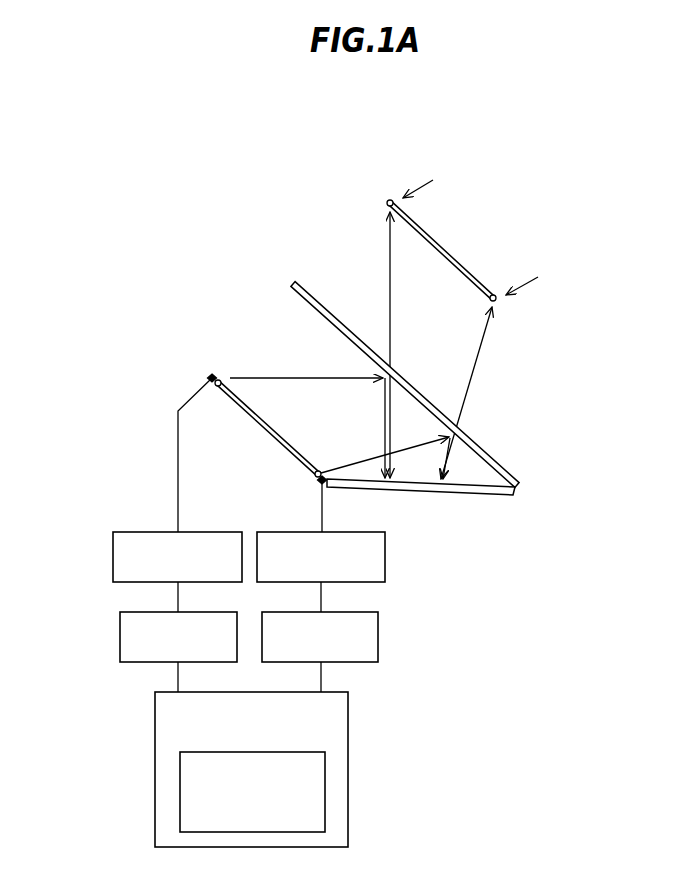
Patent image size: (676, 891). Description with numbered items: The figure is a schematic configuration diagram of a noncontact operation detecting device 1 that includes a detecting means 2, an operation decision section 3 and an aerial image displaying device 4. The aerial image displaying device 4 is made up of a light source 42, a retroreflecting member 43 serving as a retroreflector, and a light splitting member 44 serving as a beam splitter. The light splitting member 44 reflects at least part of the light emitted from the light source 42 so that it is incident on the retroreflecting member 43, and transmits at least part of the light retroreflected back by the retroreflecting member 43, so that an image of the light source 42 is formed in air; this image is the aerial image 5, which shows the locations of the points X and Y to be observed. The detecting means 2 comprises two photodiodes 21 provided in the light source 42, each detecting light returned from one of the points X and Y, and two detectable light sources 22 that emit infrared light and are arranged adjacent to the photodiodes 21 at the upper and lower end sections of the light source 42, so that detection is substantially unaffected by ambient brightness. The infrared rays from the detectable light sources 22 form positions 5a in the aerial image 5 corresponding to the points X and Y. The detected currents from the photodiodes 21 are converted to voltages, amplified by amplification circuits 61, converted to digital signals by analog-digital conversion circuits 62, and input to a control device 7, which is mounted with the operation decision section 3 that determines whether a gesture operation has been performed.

The noncontact operation detecting device 1 is at (157, 174).
The detecting means 2 is at (236, 427).
The operation decision section 3 is at (325, 788).
The aerial image displaying device 4 is at (358, 412).
The aerial image 5 is at (416, 226).
The positions in the aerial image 5a is at (391, 199).
The control device 7 is at (272, 767).
The photodiode 21 is at (208, 378).
The detectable light source 22 is at (217, 388).
The light source 42 is at (258, 432).
The retroreflecting member 43 is at (453, 494).
The light splitting member 44 is at (483, 450).
The amplification circuit 61 is at (112, 552).
The analog-digital conversion circuit 62 is at (118, 633).